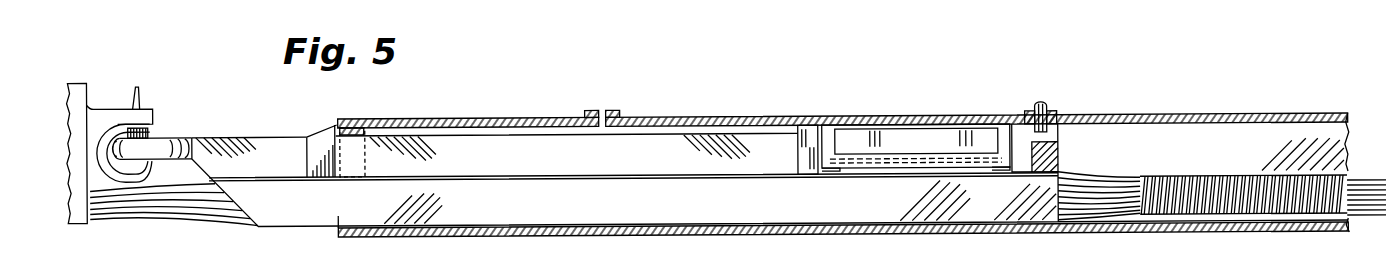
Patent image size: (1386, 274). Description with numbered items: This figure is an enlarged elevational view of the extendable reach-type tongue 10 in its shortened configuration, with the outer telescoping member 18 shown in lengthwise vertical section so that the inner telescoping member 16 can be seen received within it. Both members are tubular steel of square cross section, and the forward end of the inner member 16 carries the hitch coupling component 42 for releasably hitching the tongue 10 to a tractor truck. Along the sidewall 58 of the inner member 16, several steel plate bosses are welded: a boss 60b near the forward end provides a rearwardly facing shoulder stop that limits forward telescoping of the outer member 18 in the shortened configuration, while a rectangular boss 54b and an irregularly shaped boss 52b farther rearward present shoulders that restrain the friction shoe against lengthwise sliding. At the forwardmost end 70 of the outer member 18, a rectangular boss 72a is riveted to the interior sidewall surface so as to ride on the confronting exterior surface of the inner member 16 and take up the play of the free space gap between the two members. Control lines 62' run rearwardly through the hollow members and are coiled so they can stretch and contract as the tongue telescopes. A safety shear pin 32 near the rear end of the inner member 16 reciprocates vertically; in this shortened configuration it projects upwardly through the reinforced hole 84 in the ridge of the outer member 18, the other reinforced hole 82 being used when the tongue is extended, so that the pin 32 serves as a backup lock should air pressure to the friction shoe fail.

The extendable reach-type tongue 10 is at (732, 90).
The inner telescoping member 16 is at (283, 226).
The outer telescoping member 18 is at (765, 118).
The safety shear pin 32 is at (1041, 104).
The hitch coupling component 42 is at (168, 132).
The boss 52b is at (1022, 157).
The boss 54b is at (806, 147).
The sidewall 58 is at (582, 170).
The boss 60b is at (318, 140).
The control lines 62' is at (1222, 174).
The forwardmost end 70 is at (338, 225).
The boss 72a is at (354, 126).
The reinforced hole 82 is at (601, 111).
The reinforced hole 84 is at (1050, 114).